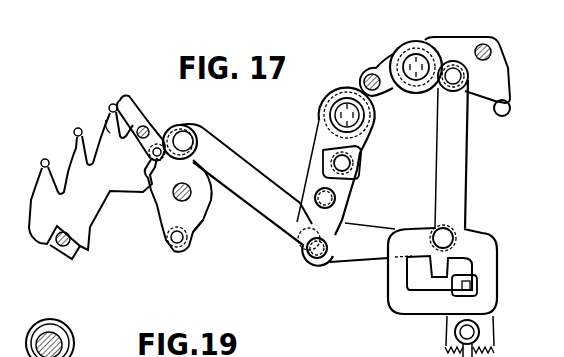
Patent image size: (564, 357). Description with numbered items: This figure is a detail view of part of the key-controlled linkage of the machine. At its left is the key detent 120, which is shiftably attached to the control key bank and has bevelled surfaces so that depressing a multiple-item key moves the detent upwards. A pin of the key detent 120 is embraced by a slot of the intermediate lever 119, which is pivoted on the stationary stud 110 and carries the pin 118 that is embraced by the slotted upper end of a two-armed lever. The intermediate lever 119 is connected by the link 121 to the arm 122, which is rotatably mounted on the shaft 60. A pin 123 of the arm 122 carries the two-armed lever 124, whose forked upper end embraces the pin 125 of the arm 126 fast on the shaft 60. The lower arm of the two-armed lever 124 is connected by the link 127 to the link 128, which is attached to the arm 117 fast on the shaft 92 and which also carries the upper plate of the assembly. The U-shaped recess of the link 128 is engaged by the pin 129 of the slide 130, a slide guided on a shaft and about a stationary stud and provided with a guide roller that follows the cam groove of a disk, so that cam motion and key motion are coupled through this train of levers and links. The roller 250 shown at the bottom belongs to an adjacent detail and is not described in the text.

In FIG. 17, the shaft 60 is at (336, 104).
In FIG. 17, the shaft 92 is at (405, 62).
In FIG. 17, the stationary stud 110 is at (193, 198).
In FIG. 17, the arm 117 is at (437, 36).
In FIG. 17, the pin 118 is at (166, 236).
In FIG. 17, the intermediate lever 119 is at (194, 224).
In FIG. 17, the key detent 120 is at (133, 112).
In FIG. 17, the link 121 is at (228, 150).
In FIG. 17, the arm 122 is at (308, 132).
In FIG. 17, the pin 123 is at (333, 197).
In FIG. 17, the two-armed lever 124 is at (345, 218).
In FIG. 17, the pin 125 is at (360, 160).
In FIG. 17, the arm 126 is at (320, 141).
In FIG. 17, the link 127 is at (353, 256).
In FIG. 17, the link 128 is at (457, 145).
In FIG. 17, the pin 129 is at (474, 284).
In FIG. 17, the slide 130 is at (487, 320).
In FIG. 19, the roller 250 is at (68, 346).